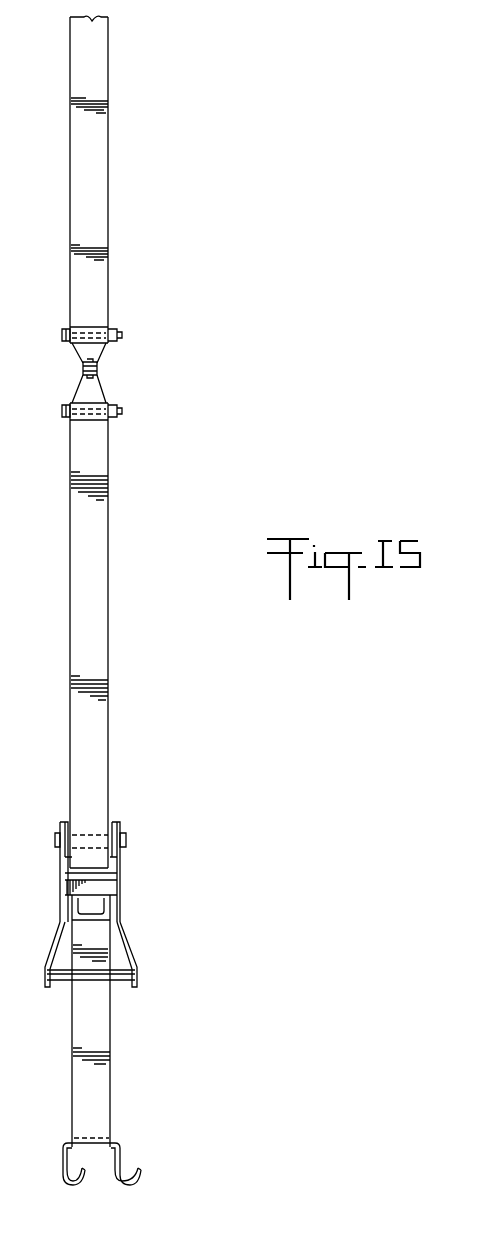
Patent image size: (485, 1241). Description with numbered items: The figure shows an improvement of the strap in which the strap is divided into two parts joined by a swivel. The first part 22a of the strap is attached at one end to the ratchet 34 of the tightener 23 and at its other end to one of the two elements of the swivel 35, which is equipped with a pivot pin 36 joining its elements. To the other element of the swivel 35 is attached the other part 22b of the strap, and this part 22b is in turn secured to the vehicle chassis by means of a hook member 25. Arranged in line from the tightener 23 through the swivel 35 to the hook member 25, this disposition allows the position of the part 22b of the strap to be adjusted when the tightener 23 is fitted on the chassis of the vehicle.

The other part of the strap 22b is at (93, 148).
The part of strap 22a is at (100, 727).
The swivel 35 is at (110, 353).
The pivot pin 36 is at (103, 398).
The ratchet 34 is at (93, 837).
The tightener 23 is at (130, 940).
The hook member 25 is at (141, 1177).